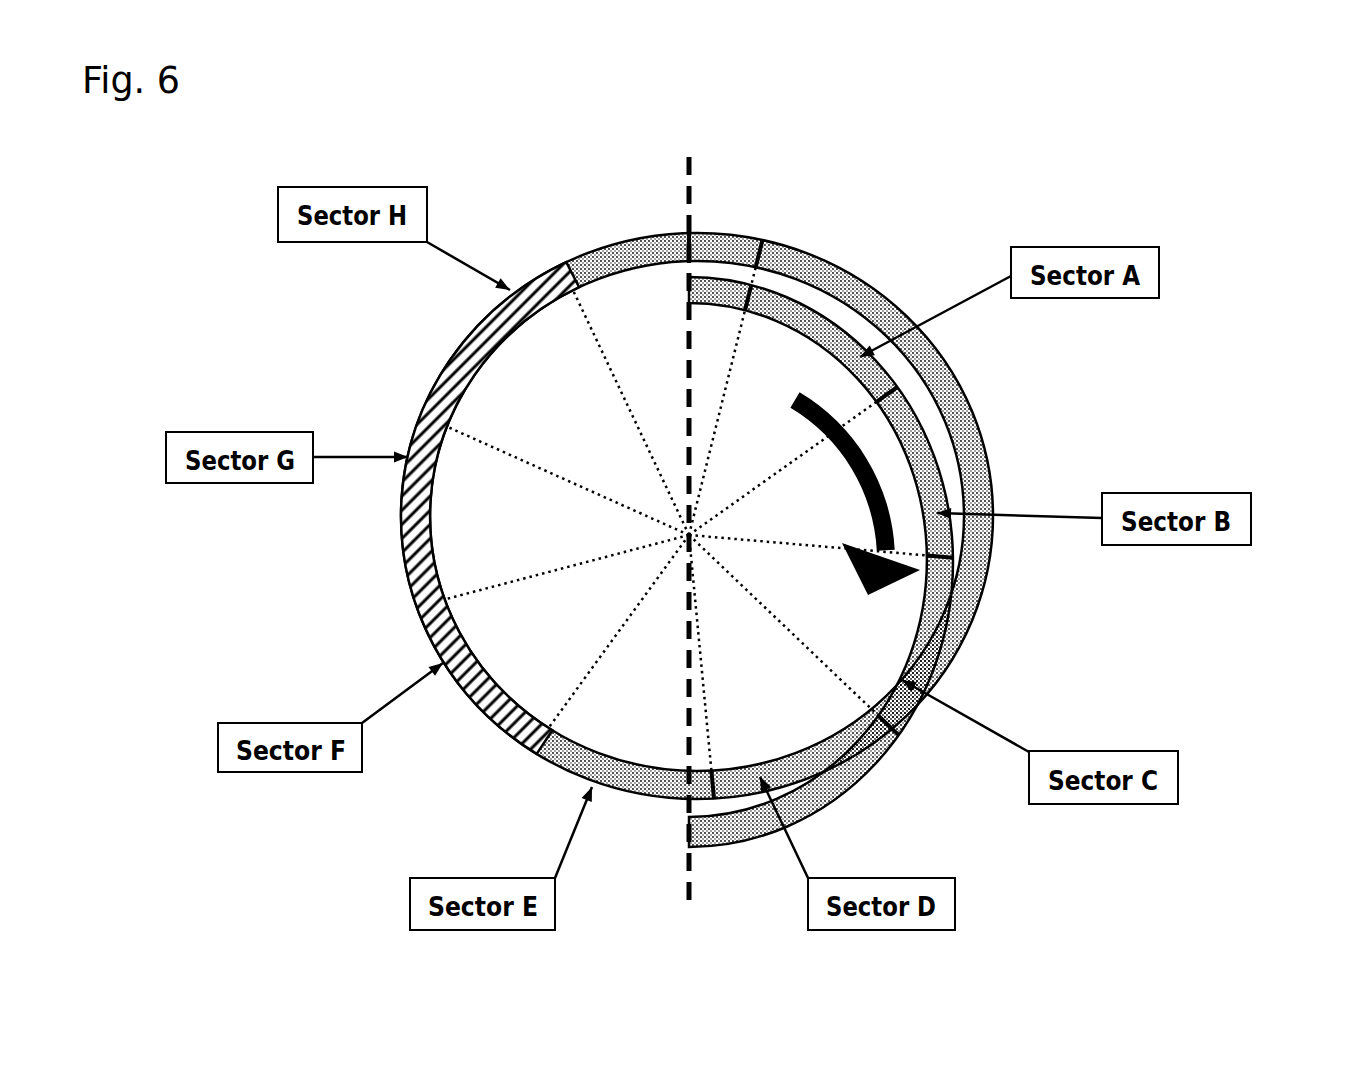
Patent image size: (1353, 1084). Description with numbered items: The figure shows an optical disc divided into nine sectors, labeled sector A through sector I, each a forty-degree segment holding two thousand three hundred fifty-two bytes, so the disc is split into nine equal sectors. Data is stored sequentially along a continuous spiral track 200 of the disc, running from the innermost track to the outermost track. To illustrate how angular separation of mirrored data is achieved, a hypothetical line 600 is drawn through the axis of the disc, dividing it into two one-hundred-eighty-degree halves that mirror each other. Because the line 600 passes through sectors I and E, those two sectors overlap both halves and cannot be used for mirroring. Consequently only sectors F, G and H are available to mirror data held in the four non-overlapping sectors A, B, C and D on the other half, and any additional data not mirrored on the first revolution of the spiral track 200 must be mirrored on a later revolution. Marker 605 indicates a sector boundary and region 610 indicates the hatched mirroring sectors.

The continuous spiral track 200 is at (997, 594).
The hypothetical line 600 is at (689, 143).
The sector boundary 605 is at (763, 265).
The hatched sector region 610 is at (408, 566).